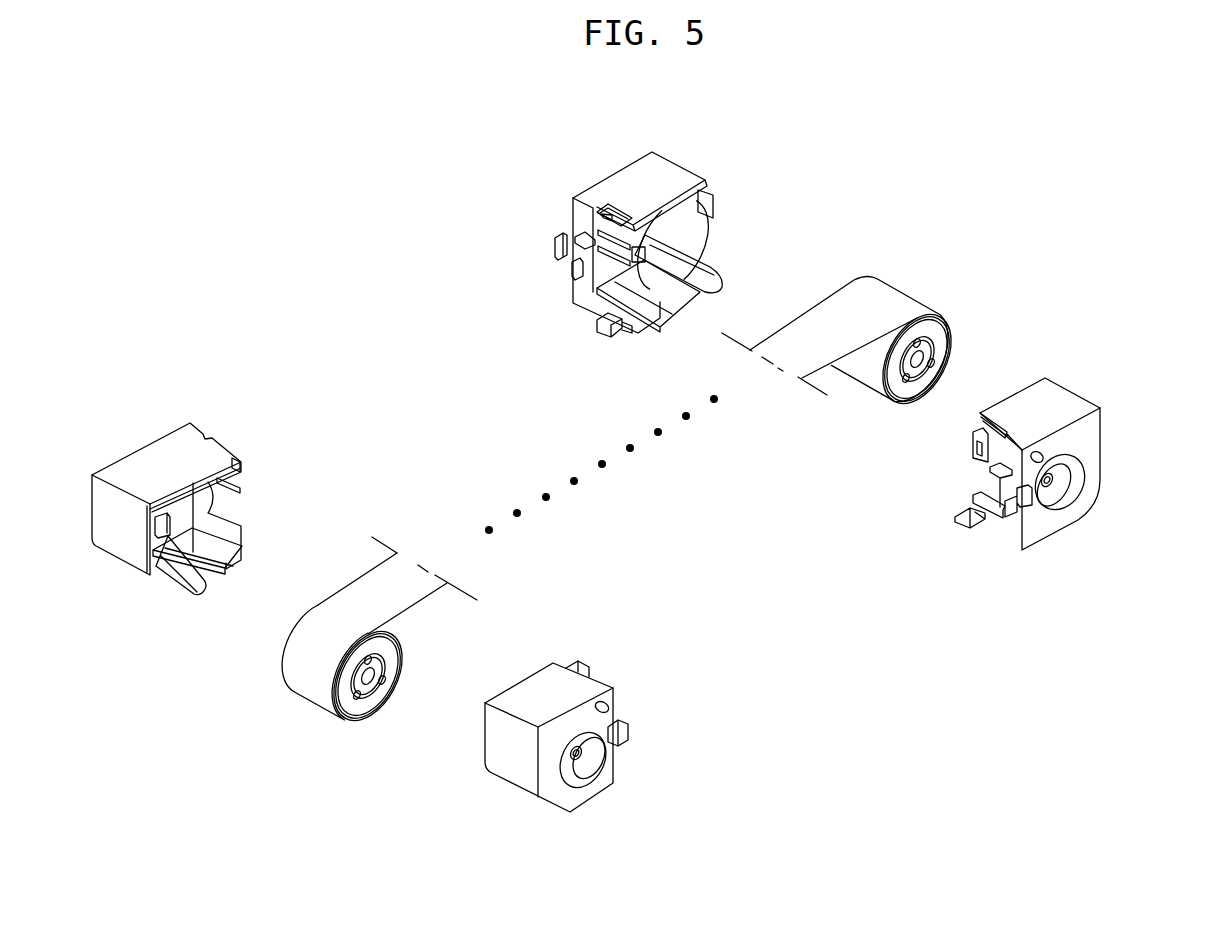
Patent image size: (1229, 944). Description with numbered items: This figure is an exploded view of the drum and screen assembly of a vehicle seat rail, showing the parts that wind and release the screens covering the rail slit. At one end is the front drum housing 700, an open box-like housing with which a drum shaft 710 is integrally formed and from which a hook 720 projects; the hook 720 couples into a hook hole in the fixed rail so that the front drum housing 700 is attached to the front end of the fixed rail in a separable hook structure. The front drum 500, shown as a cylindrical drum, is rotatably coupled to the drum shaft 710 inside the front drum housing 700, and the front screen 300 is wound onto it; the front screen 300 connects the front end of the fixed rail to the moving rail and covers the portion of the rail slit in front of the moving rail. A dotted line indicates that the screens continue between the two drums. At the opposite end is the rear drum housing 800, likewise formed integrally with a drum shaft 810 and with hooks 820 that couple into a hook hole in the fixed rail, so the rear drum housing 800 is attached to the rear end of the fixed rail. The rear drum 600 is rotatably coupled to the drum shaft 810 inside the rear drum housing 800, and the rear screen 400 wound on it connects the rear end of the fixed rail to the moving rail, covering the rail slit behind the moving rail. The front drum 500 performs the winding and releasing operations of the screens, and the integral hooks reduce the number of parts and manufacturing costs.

The front screen 300 is at (352, 588).
The rear screen 400 is at (857, 303).
The front drum 500 is at (367, 700).
The rear drum 600 is at (910, 392).
The front drum housing 700 is at (408, 628).
The drum shaft 710 is at (188, 585).
The hook 720 is at (630, 730).
The rear drum housing 800 is at (831, 356).
The drum shaft 810 is at (722, 288).
The hook 820 is at (597, 324).